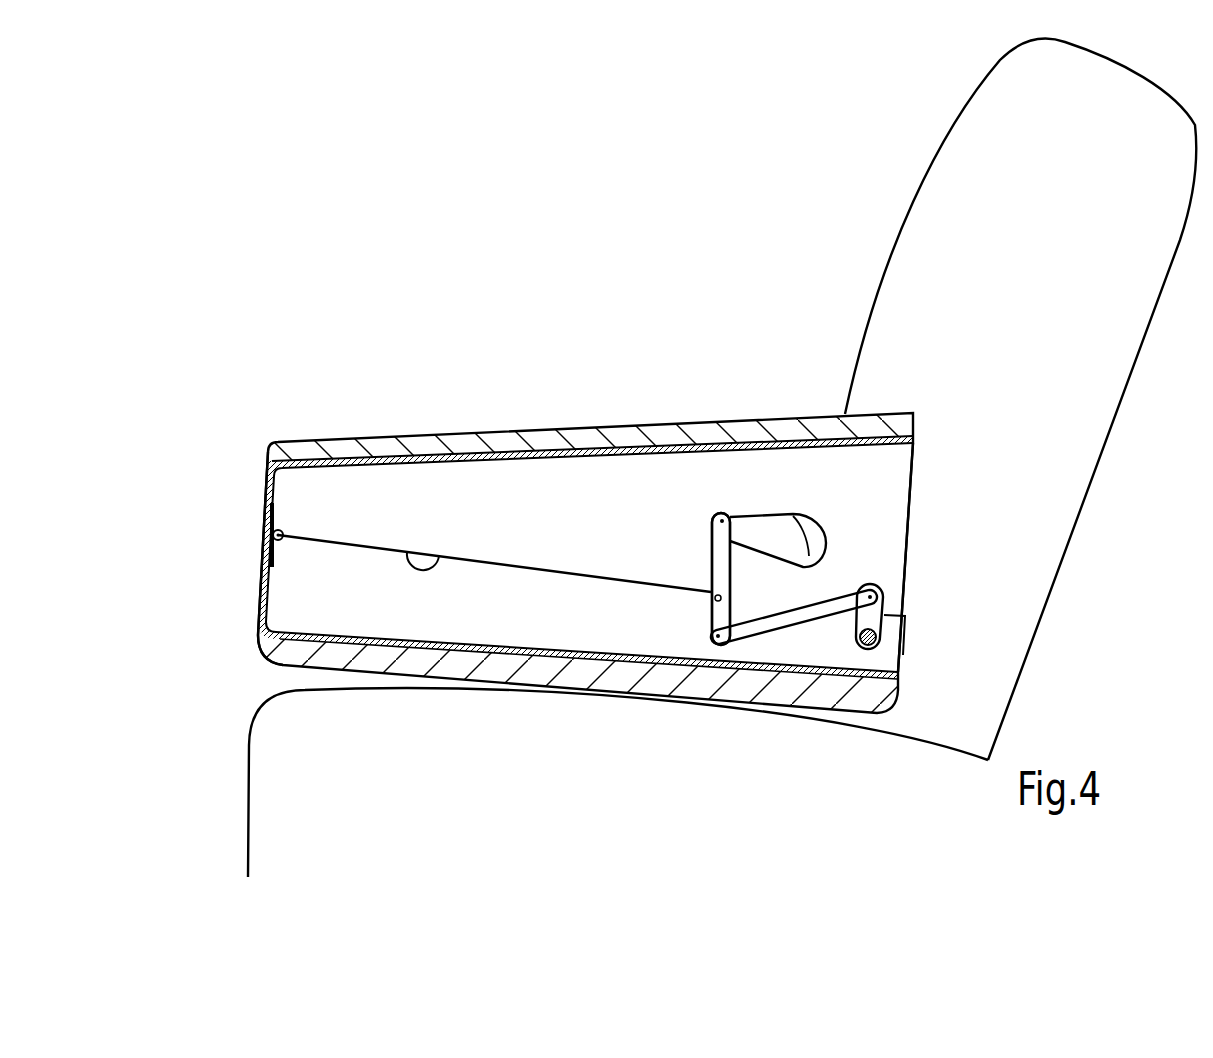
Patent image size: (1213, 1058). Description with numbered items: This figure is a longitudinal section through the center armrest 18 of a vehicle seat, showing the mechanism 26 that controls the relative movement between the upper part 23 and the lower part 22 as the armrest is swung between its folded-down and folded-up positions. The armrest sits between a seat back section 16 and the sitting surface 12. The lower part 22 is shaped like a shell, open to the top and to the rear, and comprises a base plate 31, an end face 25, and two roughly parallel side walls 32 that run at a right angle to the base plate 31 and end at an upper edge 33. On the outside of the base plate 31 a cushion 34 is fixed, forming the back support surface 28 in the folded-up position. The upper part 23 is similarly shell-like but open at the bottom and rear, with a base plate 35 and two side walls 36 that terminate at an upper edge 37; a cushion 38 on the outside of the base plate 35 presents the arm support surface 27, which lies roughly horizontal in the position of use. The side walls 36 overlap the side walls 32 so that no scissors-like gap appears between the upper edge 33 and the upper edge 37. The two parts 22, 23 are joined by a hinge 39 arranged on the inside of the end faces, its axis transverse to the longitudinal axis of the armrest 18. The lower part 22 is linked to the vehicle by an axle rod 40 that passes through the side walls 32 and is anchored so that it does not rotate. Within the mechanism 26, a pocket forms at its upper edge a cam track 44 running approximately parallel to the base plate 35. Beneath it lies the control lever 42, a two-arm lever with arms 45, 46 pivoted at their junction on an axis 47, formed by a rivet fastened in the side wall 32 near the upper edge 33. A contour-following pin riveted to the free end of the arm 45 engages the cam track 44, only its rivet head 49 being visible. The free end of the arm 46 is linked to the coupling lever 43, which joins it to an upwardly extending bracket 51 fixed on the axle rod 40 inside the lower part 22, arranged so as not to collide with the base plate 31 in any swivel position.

The sitting surface 12 is at (412, 821).
The seat back section 16 is at (920, 187).
The center armrest 18 is at (166, 574).
The lower part 22 is at (232, 653).
The upper part 23 is at (224, 364).
The end face 25 is at (261, 587).
The mechanism 26 is at (889, 494).
The arm support surface 27 is at (373, 436).
The back support surface 28 is at (265, 496).
The base plate 31 is at (347, 631).
The side walls 32 is at (478, 611).
The upper edge 33 is at (573, 579).
The cushion 34 is at (513, 674).
The base plate 35 is at (550, 466).
The side walls 36 is at (478, 521).
The upper edge 37 is at (408, 551).
The cushion 38 is at (545, 427).
The hinge 39 is at (282, 532).
The axle rod 40 is at (883, 637).
The control lever 42 is at (791, 500).
The coupling lever 43 is at (794, 646).
The cam track 44 is at (825, 541).
The arm 45 is at (722, 576).
The arm 46 is at (712, 622).
The axis 47 is at (713, 597).
The rivet head 49 is at (722, 513).
The bracket 51 is at (872, 612).